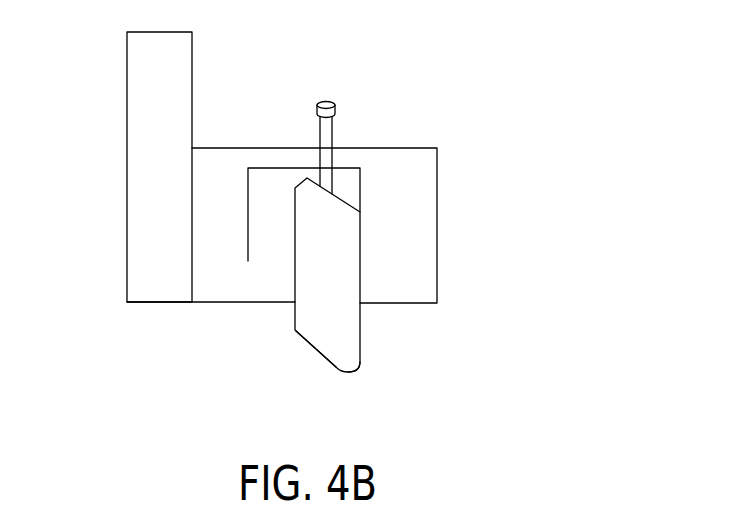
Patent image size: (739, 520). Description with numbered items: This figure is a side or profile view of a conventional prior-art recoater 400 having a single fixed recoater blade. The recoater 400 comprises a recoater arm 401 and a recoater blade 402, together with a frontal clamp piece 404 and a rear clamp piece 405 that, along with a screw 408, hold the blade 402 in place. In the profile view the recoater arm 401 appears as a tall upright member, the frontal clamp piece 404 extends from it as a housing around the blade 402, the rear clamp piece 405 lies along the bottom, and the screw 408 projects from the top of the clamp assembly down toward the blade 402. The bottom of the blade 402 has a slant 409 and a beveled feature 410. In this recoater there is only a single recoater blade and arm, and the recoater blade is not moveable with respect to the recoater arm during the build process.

The recoater 400 is at (488, 125).
The recoater arm 401 is at (126, 82).
The recoater blade 402 is at (362, 330).
The frontal clamp piece 404 is at (437, 233).
The rear clamp piece 405 is at (211, 302).
The screw 408 is at (335, 113).
The slant 409 is at (315, 352).
The beveled feature 410 is at (350, 372).